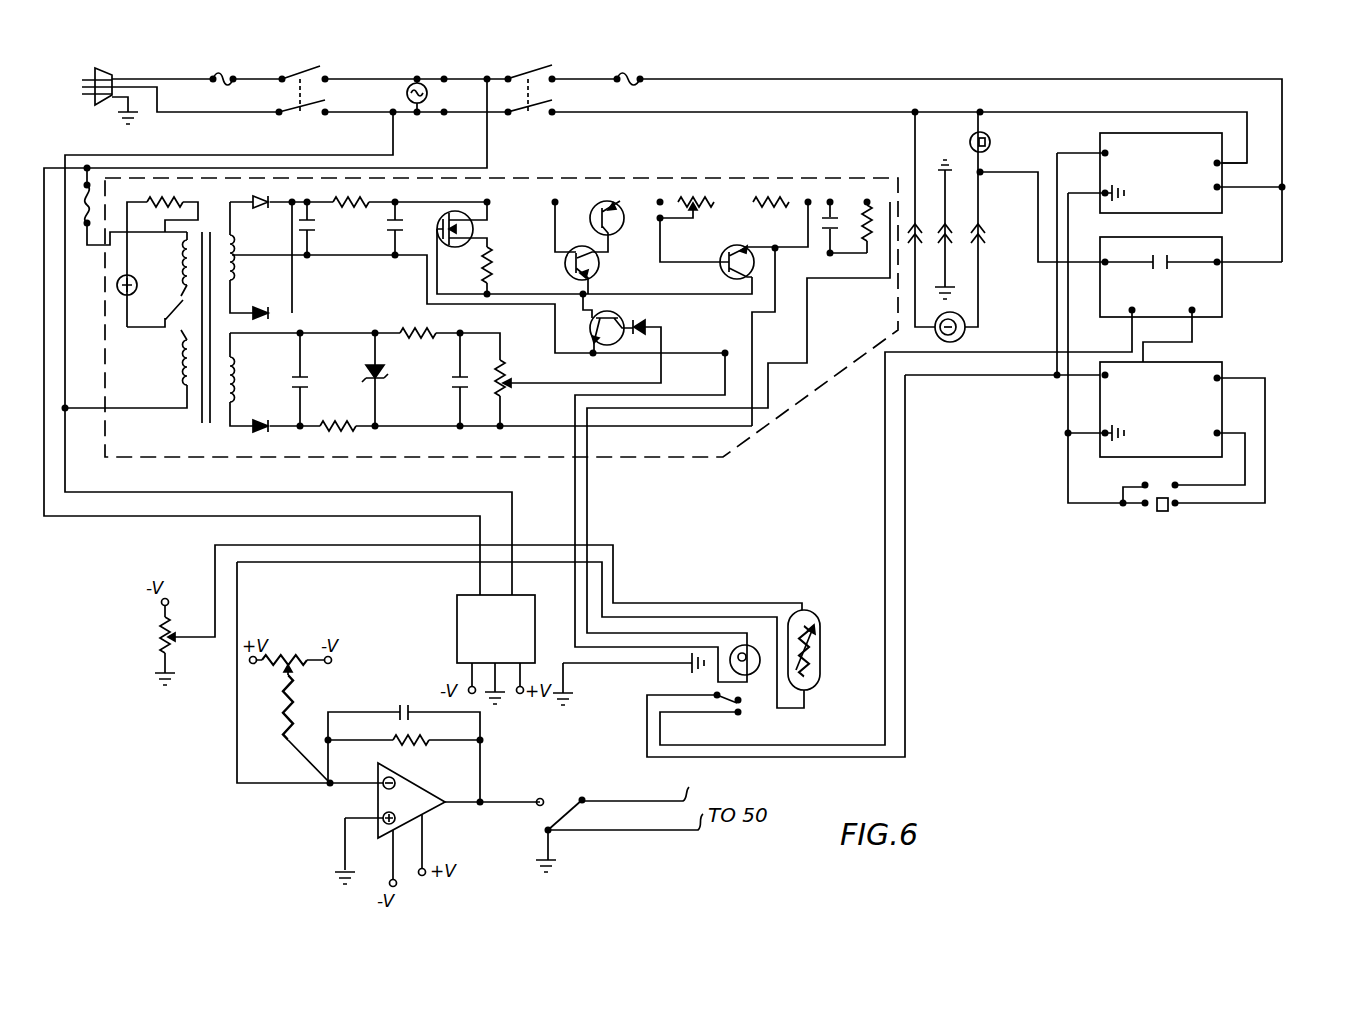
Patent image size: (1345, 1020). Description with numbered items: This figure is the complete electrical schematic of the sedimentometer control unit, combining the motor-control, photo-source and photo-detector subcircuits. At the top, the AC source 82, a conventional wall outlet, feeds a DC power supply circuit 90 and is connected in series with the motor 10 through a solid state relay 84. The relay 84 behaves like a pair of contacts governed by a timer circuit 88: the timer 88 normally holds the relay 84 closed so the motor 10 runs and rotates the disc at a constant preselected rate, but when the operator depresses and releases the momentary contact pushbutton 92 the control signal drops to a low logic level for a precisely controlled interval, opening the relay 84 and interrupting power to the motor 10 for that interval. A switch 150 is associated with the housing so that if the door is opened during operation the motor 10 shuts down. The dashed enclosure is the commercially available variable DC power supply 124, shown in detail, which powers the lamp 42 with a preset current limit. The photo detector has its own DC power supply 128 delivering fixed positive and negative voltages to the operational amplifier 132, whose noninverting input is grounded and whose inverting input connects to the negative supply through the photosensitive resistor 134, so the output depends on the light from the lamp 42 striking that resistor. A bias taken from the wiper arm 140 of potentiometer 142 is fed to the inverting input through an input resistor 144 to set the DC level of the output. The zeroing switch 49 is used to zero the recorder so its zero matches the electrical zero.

The AC source 82 is at (116, 66).
The variable DC power supply 124 is at (658, 178).
The DC power supply circuit 90 is at (1195, 198).
The solid state relay 84 is at (1208, 293).
The timer circuit 88 is at (1193, 412).
The motor 10 is at (957, 340).
The momentary contact pushbutton 92 is at (1172, 511).
The photosensitive resistor 134 is at (810, 612).
The lamp 42 is at (752, 672).
The switch 150 is at (727, 707).
The DC power supply 128 is at (457, 628).
The potentiometer 142 is at (288, 655).
The wiper arm 140 is at (287, 673).
The input resistor 144 is at (298, 700).
The operational amplifier 132 is at (398, 778).
The zeroing switch 49 is at (570, 822).